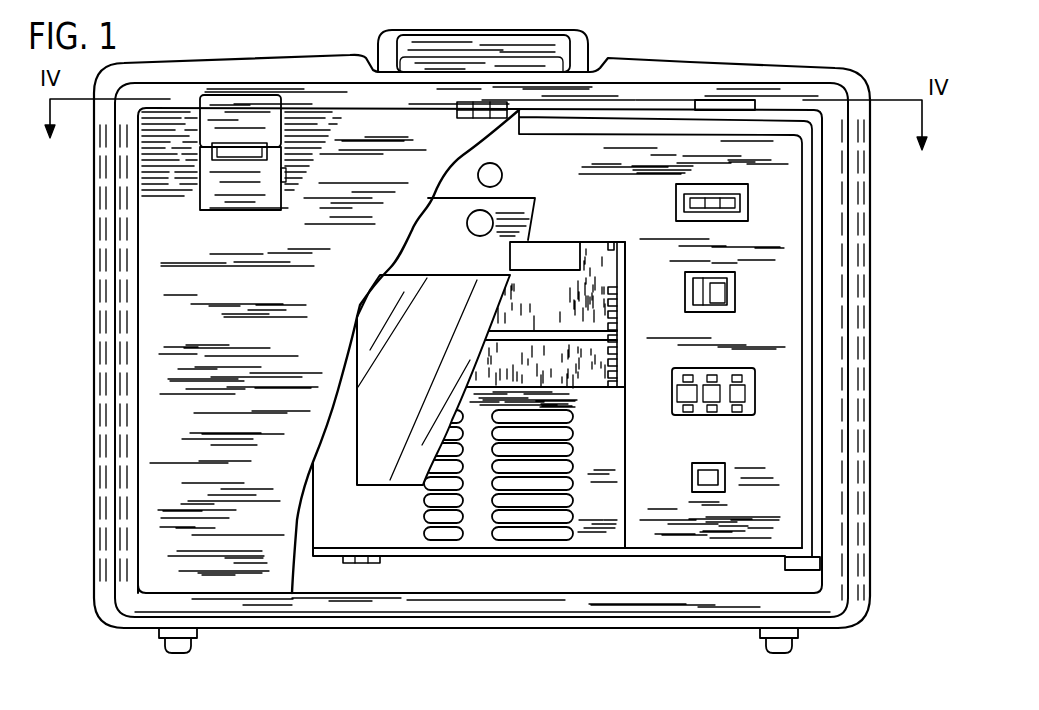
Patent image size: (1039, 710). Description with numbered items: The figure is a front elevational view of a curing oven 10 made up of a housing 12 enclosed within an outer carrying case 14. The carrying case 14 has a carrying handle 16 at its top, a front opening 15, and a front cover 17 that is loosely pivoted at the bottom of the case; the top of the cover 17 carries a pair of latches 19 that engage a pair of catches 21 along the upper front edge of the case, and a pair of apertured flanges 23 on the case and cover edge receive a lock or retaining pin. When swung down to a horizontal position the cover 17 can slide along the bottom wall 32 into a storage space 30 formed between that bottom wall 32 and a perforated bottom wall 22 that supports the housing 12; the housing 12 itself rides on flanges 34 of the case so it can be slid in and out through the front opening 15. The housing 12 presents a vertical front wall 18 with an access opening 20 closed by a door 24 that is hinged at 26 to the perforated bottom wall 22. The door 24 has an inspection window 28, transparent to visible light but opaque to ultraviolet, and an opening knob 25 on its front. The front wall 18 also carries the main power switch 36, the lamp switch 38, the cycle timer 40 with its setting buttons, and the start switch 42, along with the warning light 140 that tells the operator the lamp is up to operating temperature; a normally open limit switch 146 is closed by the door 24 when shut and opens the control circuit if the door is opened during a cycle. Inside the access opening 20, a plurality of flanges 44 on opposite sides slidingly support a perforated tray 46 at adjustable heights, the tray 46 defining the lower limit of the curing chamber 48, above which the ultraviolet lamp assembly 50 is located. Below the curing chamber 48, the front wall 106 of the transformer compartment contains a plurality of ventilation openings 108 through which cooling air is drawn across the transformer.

The curing oven 10 is at (828, 56).
The housing 12 is at (620, 115).
The outer carrying case 14 is at (858, 250).
The front opening 15 is at (814, 442).
The carrying handle 16 is at (543, 43).
The front cover 17 is at (163, 468).
The vertical front wall 18 is at (770, 454).
The latches 19 is at (227, 103).
The access opening 20 is at (617, 468).
The catches 21 is at (715, 107).
The perforated bottom wall 22 is at (713, 550).
The apertured flanges 23 is at (461, 110).
The door 24 is at (507, 208).
The opening knob 25 is at (466, 226).
The hinge 26 is at (365, 563).
The inspection window 28 is at (502, 273).
The space 30 is at (520, 578).
The bottom wall 32 is at (645, 605).
The flanges 34 is at (803, 563).
The main power switch 36 is at (727, 206).
The lamp switch 38 is at (717, 297).
The cycle timer 40 is at (743, 394).
The start switch 42 is at (726, 480).
The flanges 44 is at (614, 326).
The perforated tray 46 is at (545, 333).
The curing chamber 48 is at (592, 245).
The ultraviolet lamp assembly 50 is at (553, 254).
The front wall of the compartment 106 is at (613, 500).
The ventilation openings 108 is at (572, 443).
The warning light 140 is at (480, 168).
The limit switch 146 is at (613, 243).